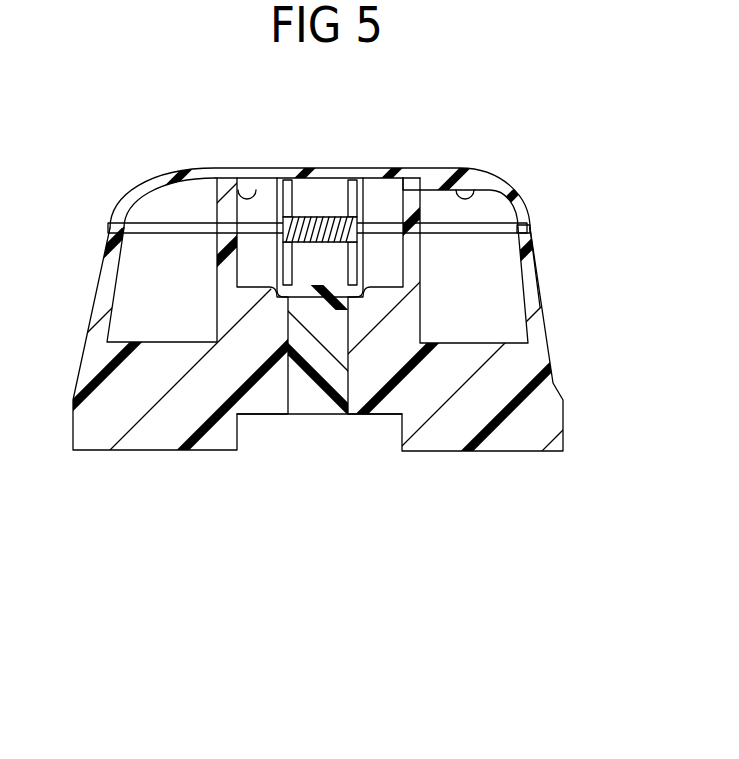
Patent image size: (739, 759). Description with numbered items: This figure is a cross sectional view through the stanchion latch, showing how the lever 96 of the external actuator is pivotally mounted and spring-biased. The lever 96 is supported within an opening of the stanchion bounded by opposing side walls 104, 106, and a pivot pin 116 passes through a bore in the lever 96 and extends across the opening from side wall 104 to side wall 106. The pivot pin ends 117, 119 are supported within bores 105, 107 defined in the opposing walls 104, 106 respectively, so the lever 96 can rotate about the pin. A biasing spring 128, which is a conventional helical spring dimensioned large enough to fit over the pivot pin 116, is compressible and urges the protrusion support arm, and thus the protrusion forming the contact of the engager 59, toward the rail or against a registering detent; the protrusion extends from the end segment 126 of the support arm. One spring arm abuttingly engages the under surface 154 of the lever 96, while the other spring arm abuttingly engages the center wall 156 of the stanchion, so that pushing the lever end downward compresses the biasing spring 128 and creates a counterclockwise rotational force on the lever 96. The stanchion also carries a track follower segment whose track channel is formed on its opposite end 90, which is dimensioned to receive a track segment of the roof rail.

The engager 59 is at (338, 345).
The opposite end 90 is at (141, 433).
The lever 96 is at (323, 170).
The side wall 104 is at (405, 177).
The bore 105 is at (108, 228).
The side wall 106 is at (232, 182).
The bore 107 is at (530, 232).
The pivot pin 116 is at (495, 228).
The pivot pin end 117 is at (525, 229).
The pivot pin end 119 is at (118, 222).
The end segment 126 is at (304, 400).
The biasing spring 128 is at (333, 217).
The under surface 154 is at (262, 190).
The center wall 156 is at (384, 290).